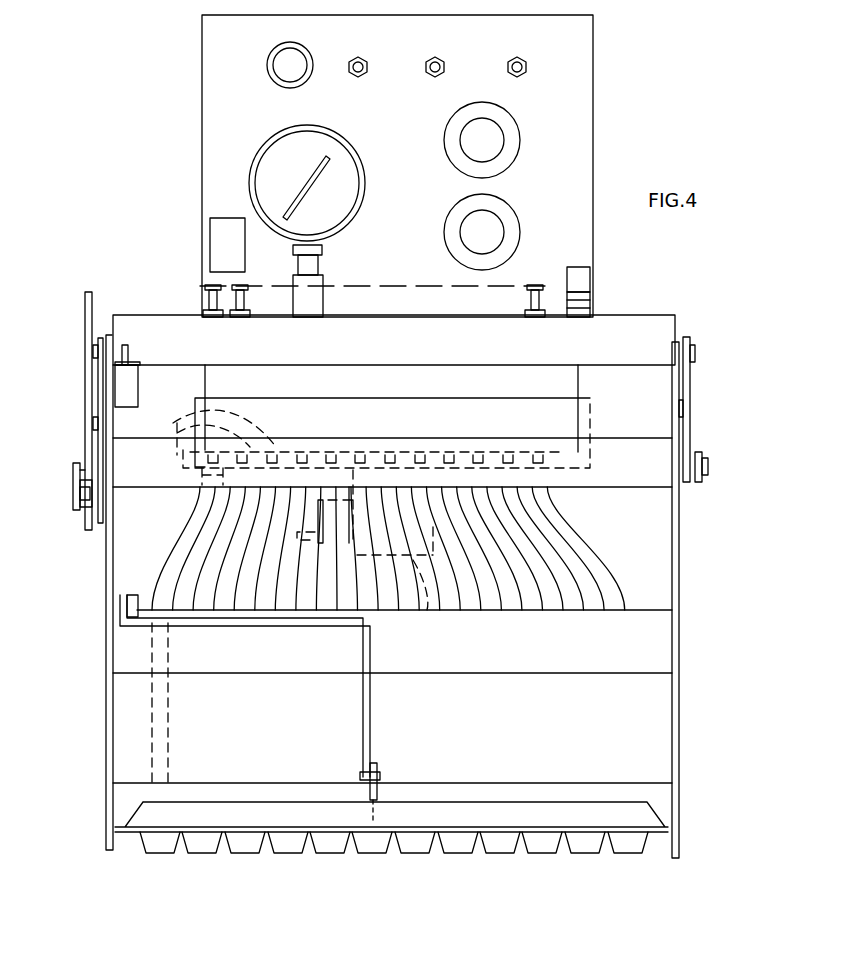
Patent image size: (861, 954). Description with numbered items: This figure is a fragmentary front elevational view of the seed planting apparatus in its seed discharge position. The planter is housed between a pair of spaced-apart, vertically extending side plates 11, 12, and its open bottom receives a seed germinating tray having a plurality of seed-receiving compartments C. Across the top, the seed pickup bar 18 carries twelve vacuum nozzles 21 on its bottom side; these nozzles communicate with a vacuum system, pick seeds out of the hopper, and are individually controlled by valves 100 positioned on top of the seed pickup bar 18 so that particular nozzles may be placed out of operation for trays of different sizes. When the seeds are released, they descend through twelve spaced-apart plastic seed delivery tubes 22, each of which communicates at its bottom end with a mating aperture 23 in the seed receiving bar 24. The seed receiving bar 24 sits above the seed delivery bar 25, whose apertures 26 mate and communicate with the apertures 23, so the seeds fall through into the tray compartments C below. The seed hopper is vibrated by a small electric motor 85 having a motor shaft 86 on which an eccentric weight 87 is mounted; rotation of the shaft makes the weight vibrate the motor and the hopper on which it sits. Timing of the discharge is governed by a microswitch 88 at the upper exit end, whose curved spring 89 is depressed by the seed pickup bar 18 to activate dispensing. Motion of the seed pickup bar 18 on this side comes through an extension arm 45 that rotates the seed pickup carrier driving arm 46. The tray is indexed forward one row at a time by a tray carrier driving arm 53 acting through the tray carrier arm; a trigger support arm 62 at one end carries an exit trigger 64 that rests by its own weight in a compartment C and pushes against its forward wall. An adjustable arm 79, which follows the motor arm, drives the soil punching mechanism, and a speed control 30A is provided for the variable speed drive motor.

The side plate 11 is at (110, 568).
The side plate 12 is at (673, 632).
The seed pickup bar 18 is at (157, 345).
The vacuum nozzles 21 is at (175, 424).
The seed delivery tubes 22 is at (287, 563).
The aperture 23 is at (153, 694).
The seed receiving bar 24 is at (496, 665).
The seed delivery bar 25 is at (504, 763).
The apertures 26 is at (157, 763).
The speed control 30A is at (490, 240).
The extension arm 45 is at (702, 453).
The seed pickup carrier driving arm 46 is at (688, 378).
The tray carrier driving arm 53 is at (130, 597).
The trigger support arm 62 is at (228, 626).
The exit trigger 64 is at (375, 767).
The adjustable arm 79 is at (86, 333).
The electric motor 85 is at (427, 610).
The motor shaft 86 is at (310, 545).
The eccentric weight 87 is at (350, 545).
The microswitch 88 is at (129, 392).
The curved spring 89 is at (130, 345).
The valves 100 is at (232, 286).
The seed-receiving compartments C is at (158, 826).